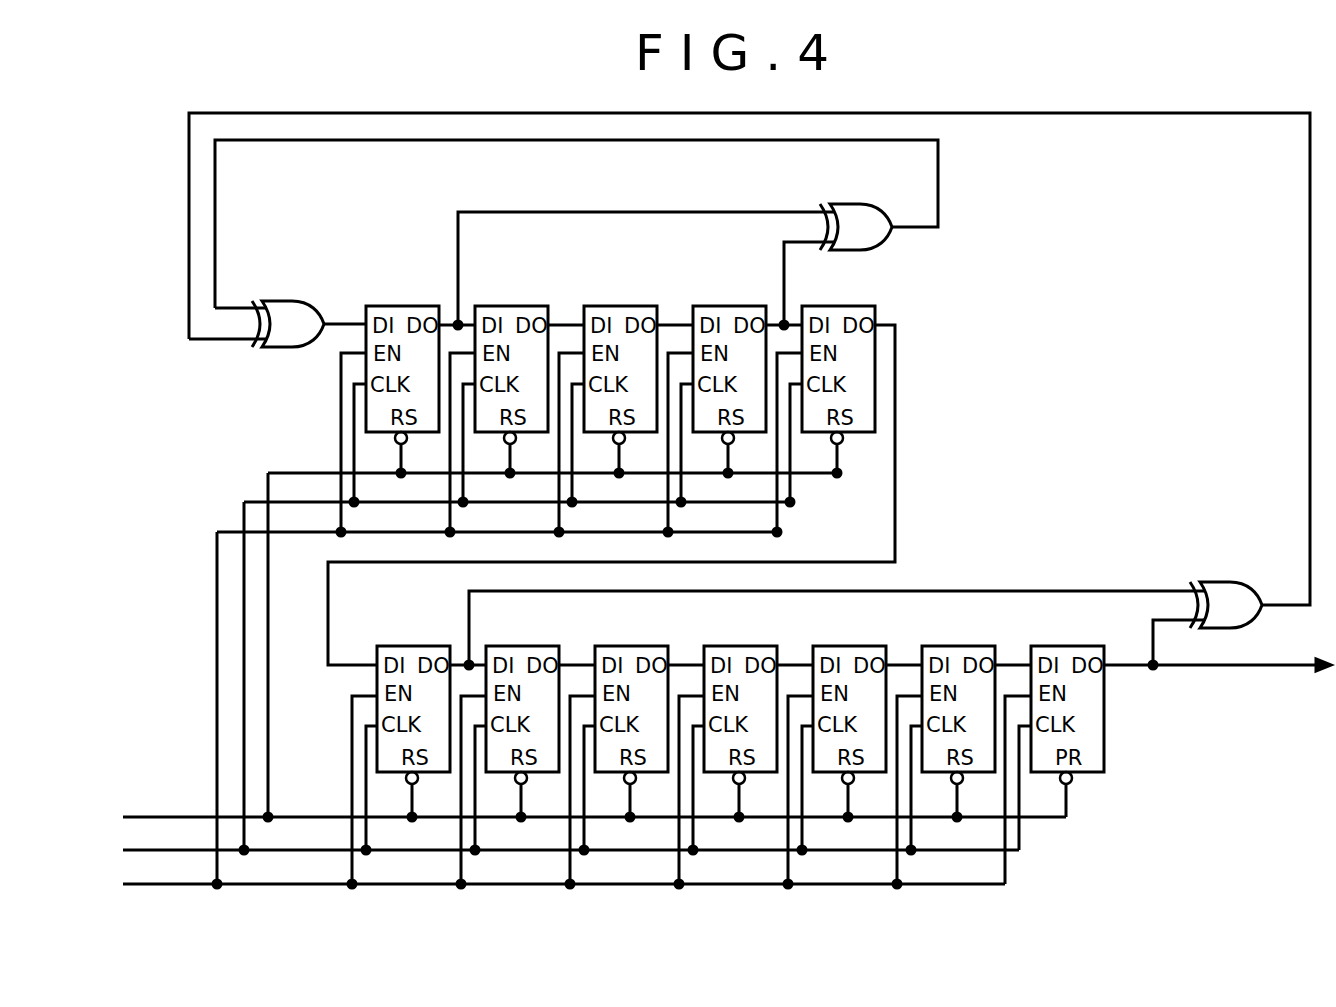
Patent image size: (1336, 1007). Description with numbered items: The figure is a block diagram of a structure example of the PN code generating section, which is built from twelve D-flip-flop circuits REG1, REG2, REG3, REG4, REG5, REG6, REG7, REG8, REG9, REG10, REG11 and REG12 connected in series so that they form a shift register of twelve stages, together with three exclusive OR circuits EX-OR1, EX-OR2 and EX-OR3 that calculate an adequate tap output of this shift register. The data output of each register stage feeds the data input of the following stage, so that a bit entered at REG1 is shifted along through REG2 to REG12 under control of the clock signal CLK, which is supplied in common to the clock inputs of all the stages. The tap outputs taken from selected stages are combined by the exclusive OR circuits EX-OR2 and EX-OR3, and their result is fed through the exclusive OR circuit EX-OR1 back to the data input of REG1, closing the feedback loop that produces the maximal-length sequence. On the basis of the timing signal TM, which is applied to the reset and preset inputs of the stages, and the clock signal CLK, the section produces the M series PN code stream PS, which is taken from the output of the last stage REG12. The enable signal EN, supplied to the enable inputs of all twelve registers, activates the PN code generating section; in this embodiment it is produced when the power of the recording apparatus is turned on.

The D-flip-flop circuit REG1 is at (392, 305).
The D-flip-flop circuit REG2 is at (506, 305).
The D-flip-flop circuit REG3 is at (616, 305).
The D-flip-flop circuit REG4 is at (724, 305).
The D-flip-flop circuit REG5 is at (832, 305).
The D-flip-flop circuit REG6 is at (401, 645).
The D-flip-flop circuit REG7 is at (523, 645).
The D-flip-flop circuit REG8 is at (628, 645).
The D-flip-flop circuit REG9 is at (736, 645).
The D-flip-flop circuit REG10 is at (846, 645).
The D-flip-flop circuit REG11 is at (955, 645).
The D-flip-flop circuit REG12 is at (1060, 645).
The exclusive OR circuit EX-OR1 is at (270, 300).
The exclusive OR circuit EX-OR2 is at (675, 243).
The exclusive OR circuit EX-OR3 is at (1207, 581).
The timing signal TM is at (594, 803).
The clock signal CLK is at (571, 836).
The enable signal EN is at (564, 870).
The PN code stream PS is at (1217, 654).